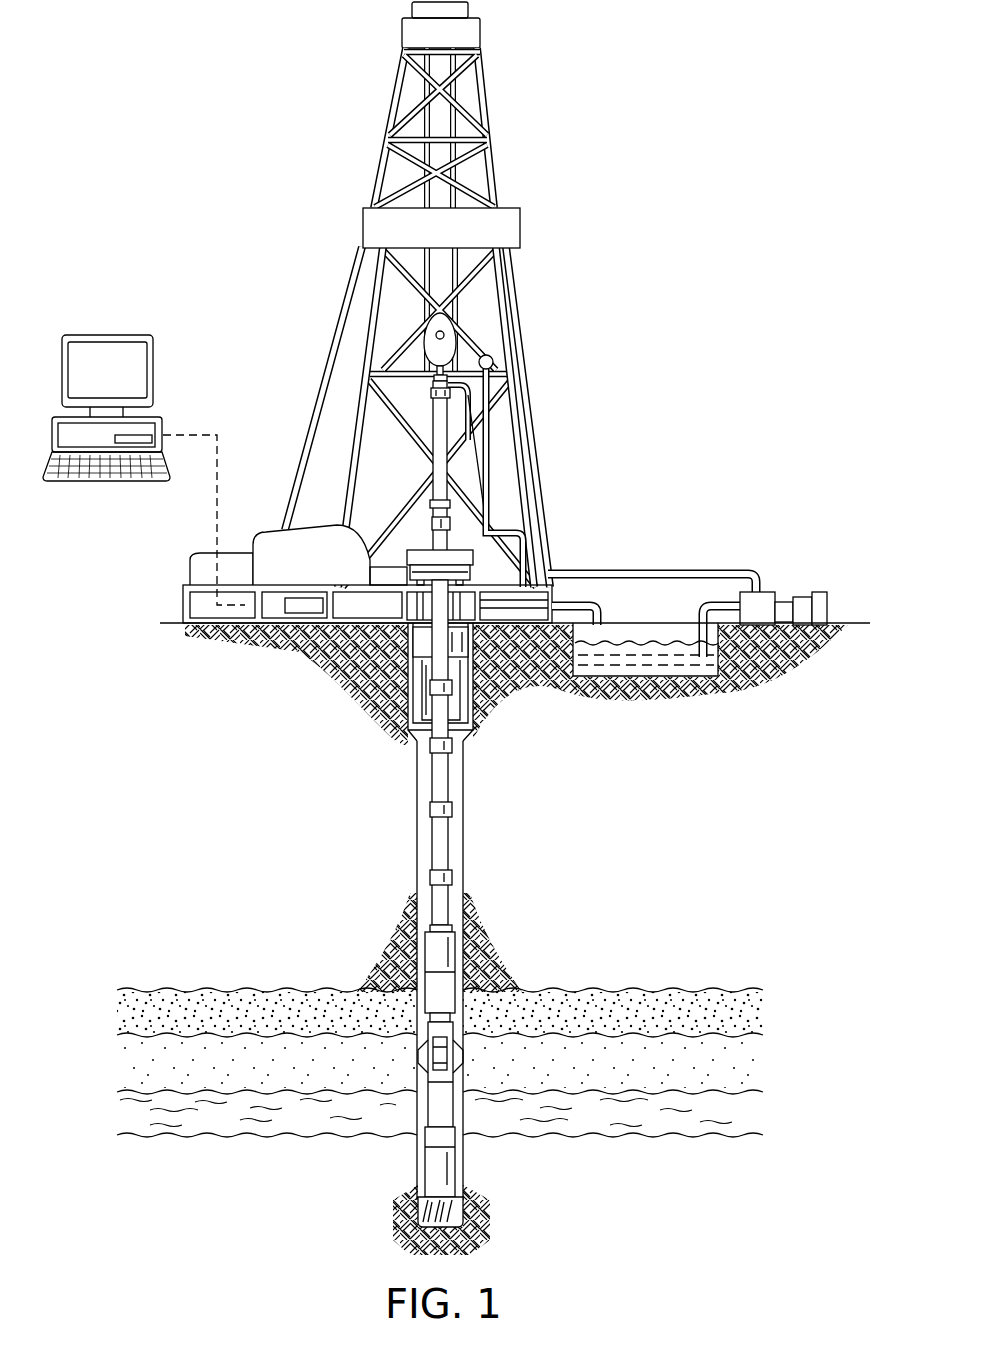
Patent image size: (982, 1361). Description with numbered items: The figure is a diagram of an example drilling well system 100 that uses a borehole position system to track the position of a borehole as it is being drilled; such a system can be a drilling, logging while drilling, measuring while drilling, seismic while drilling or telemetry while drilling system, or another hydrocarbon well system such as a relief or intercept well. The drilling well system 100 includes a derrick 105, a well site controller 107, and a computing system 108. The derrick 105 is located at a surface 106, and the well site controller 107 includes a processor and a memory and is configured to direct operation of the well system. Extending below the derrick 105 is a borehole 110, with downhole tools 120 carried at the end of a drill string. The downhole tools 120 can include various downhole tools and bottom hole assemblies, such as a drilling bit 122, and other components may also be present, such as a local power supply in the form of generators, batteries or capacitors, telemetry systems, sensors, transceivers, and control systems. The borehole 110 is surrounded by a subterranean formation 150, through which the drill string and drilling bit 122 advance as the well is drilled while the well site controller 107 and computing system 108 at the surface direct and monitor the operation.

The drilling well system 100 is at (219, 109).
The derrick 105 is at (513, 303).
The surface 106 is at (845, 624).
The well site controller 107 is at (305, 608).
The computing system 108 is at (107, 335).
The borehole 110 is at (417, 836).
The downhole tools 120 is at (471, 1084).
The drilling bit 122 is at (417, 1206).
The subterranean formation 150 is at (782, 1074).